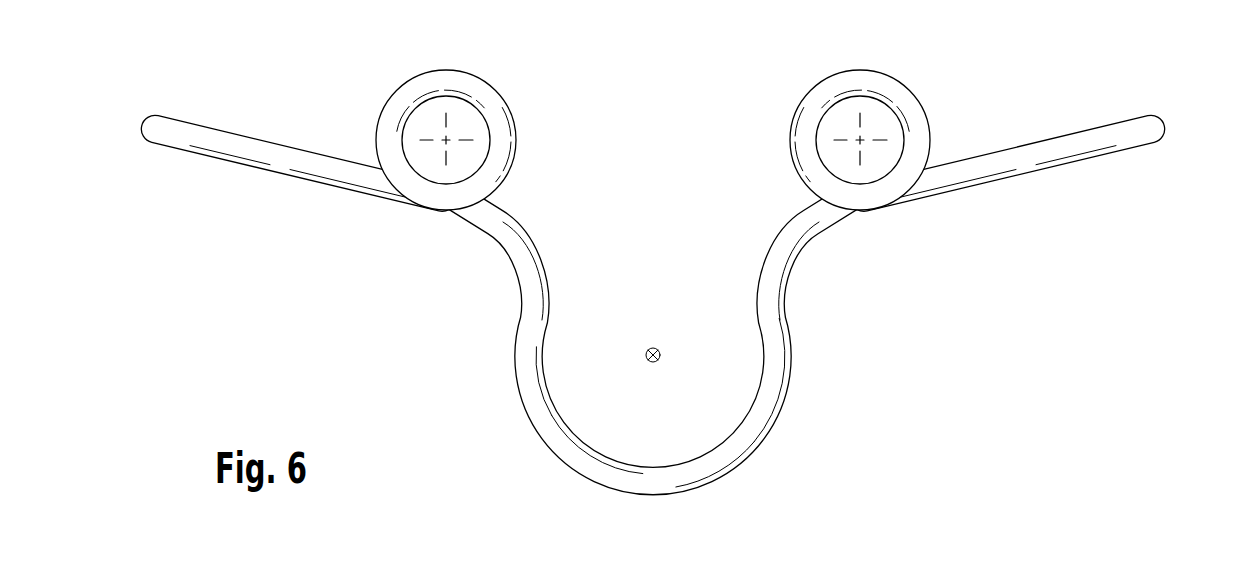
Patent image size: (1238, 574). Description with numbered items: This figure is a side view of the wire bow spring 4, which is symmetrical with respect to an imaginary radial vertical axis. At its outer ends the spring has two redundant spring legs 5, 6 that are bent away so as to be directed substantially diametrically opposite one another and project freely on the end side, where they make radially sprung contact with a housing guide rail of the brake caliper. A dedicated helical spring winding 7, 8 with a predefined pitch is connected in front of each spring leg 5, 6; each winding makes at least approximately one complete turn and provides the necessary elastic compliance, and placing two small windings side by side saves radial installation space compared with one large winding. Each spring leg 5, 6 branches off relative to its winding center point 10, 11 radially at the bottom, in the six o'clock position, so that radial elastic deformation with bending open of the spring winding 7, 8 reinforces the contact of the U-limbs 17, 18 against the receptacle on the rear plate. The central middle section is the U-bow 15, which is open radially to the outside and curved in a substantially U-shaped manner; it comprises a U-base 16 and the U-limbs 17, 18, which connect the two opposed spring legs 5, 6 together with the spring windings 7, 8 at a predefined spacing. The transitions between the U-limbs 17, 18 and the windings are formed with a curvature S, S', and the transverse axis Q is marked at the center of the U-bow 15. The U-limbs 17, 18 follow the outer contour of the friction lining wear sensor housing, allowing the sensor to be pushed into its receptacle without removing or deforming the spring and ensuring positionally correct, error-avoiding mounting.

The wire bow spring 4 is at (270, 190).
The spring leg 5 is at (1128, 130).
The spring leg 6 is at (172, 128).
The spring winding 7 is at (800, 117).
The spring winding 8 is at (493, 108).
The winding center point 10 is at (447, 138).
The winding center point 11 is at (862, 138).
The U-bow 15 is at (508, 375).
The U-base 16 is at (657, 483).
The U-limb 17 is at (780, 363).
The U-limb 18 is at (523, 348).
The curvature S is at (811, 271).
The curvature S' is at (496, 271).
The transverse axis Q is at (663, 355).